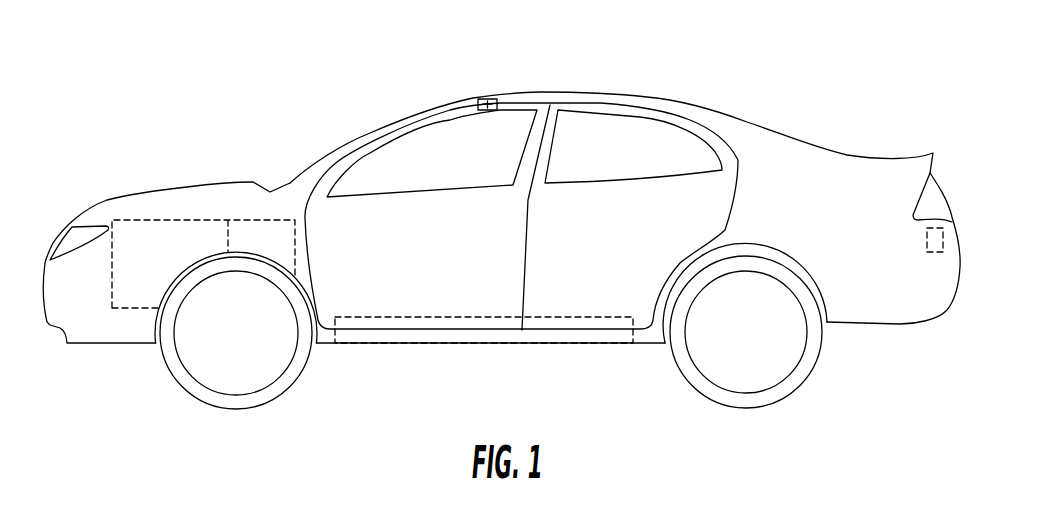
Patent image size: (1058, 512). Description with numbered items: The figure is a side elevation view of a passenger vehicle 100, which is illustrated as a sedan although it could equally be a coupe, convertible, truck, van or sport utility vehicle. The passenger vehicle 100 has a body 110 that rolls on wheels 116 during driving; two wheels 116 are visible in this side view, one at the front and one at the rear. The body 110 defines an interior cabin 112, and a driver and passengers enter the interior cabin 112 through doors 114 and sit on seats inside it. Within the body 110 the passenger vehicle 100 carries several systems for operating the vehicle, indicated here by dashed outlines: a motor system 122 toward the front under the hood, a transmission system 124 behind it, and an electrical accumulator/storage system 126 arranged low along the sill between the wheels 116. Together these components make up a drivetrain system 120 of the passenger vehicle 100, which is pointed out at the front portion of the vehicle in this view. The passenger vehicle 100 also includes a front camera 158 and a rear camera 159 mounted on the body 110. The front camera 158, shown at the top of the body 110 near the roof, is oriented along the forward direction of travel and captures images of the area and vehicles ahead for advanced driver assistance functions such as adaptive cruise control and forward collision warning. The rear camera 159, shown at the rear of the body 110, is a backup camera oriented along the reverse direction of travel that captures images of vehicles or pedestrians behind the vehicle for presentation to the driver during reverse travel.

The passenger vehicle 100 is at (501, 242).
The body 110 is at (501, 213).
The interior cabin 112 is at (594, 132).
The doors 114 is at (372, 150).
The wheels 116 is at (207, 363).
The drivetrain system 120 is at (226, 190).
The motor system 122 is at (187, 218).
The transmission system 124 is at (295, 253).
The electrical accumulator/storage system 126 is at (413, 317).
The front camera 158 is at (488, 98).
The rear camera 159 is at (927, 243).